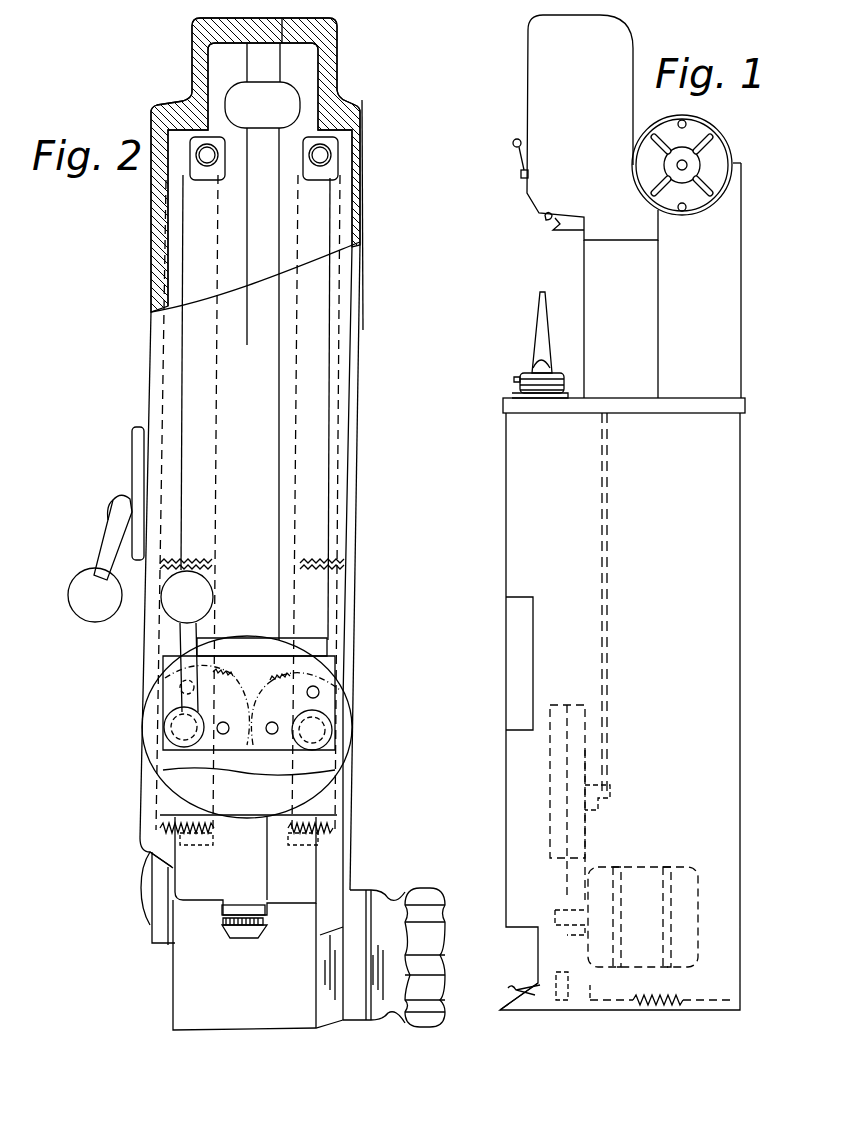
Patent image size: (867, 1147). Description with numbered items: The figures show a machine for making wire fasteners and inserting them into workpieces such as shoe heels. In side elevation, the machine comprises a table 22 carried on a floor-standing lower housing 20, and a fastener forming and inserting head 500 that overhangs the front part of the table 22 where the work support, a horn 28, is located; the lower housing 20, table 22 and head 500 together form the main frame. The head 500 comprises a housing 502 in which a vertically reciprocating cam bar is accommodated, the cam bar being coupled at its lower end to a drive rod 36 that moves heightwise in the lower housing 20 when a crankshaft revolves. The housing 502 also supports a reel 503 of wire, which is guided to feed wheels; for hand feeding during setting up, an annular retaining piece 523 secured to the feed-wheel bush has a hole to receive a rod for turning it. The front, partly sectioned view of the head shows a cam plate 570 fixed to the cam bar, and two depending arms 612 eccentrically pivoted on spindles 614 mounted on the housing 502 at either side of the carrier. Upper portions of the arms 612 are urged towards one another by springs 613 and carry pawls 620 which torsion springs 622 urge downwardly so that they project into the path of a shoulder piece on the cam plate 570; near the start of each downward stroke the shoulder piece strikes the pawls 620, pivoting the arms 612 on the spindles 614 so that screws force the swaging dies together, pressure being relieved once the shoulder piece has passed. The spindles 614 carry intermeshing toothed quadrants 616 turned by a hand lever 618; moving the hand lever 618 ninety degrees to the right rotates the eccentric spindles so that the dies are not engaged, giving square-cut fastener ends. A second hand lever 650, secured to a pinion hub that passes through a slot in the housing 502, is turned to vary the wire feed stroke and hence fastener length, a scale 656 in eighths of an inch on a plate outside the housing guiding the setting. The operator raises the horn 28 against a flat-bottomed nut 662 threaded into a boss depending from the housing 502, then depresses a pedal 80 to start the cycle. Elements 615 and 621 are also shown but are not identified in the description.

In FIG. 1, the lower housing 20 is at (730, 619).
In FIG. 1, the table 22 is at (743, 414).
In FIG. 1, the horn 28 is at (536, 330).
In FIG. 1, the drive rod 36 is at (608, 515).
In FIG. 1, the pedal 80 is at (514, 990).
In FIG. 2, the fastener forming and inserting head 500 is at (125, 337).
In FIG. 1, the fastener forming and inserting head 500 is at (520, 99).
In FIG. 2, the housing 502 is at (152, 272).
In FIG. 1, the housing 502 is at (640, 325).
In FIG. 1, the reel 503 is at (720, 150).
In FIG. 2, the annular retaining piece 523 is at (160, 938).
In FIG. 2, the cam plate 570 is at (263, 280).
In FIG. 2, the depending arms 612 is at (190, 228).
In FIG. 2, the springs 613 is at (212, 565).
In FIG. 2, the spindles 614 is at (160, 730).
In FIG. 2, the hole 615 is at (224, 722).
In FIG. 2, the toothed quadrants 616 is at (277, 712).
In FIG. 2, the hand lever 618 is at (178, 680).
In FIG. 1, the hand lever 618 is at (517, 155).
In FIG. 2, the pawls 620 is at (302, 160).
In FIG. 2, the slot 621 is at (240, 88).
In FIG. 2, the torsion springs 622 is at (223, 158).
In FIG. 2, the hand lever 650 is at (118, 548).
In FIG. 2, the scale 656 is at (132, 432).
In FIG. 2, the flat-bottomed nut 662 is at (245, 938).